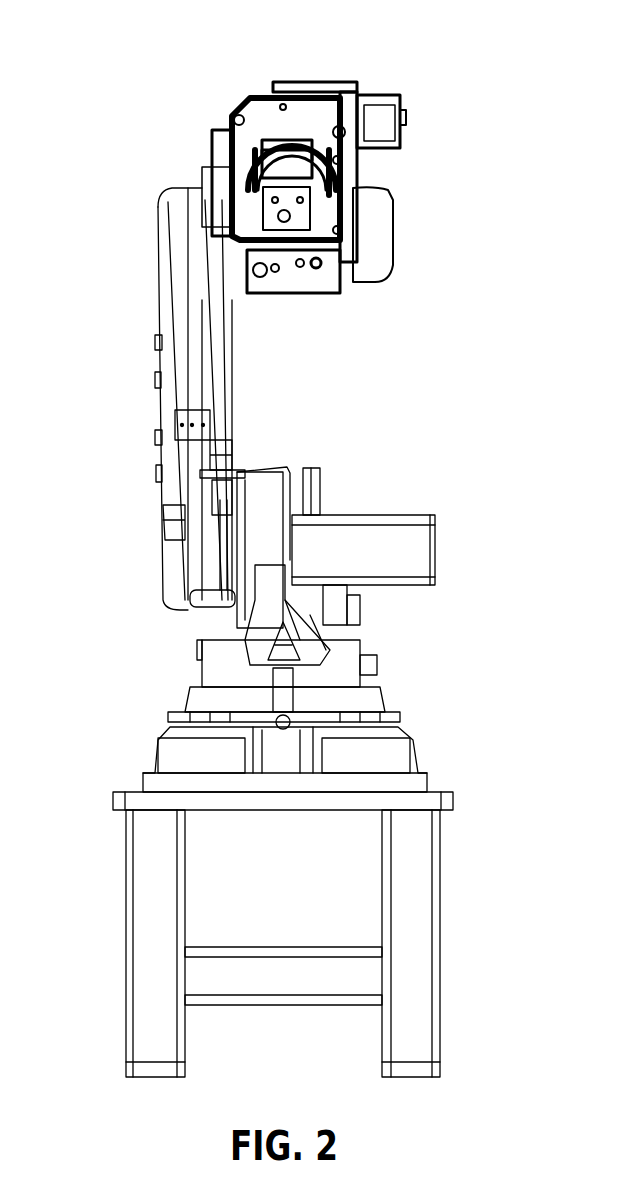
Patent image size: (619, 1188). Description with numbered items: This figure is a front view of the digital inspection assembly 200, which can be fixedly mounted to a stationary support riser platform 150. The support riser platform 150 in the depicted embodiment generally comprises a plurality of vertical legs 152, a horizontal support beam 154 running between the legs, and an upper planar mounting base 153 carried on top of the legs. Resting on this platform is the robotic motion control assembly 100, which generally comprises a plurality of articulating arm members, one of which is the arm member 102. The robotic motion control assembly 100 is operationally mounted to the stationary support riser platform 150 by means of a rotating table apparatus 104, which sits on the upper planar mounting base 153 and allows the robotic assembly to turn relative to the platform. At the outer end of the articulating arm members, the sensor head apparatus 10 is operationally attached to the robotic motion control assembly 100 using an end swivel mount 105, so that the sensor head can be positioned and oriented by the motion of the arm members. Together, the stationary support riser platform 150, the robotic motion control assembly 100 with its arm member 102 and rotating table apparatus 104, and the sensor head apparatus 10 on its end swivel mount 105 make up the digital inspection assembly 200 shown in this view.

The digital inspection assembly 200 is at (113, 182).
The robotic motion control assembly 100 is at (152, 342).
The sensor head apparatus 10 is at (355, 165).
The end swivel mount 105 is at (322, 122).
The arm member 102 is at (203, 383).
The rotating table apparatus 104 is at (383, 755).
The support riser platform 150 is at (445, 962).
The vertical legs 152 is at (150, 898).
The upper planar mounting base 153 is at (431, 803).
The horizontal support beam 154 is at (274, 977).